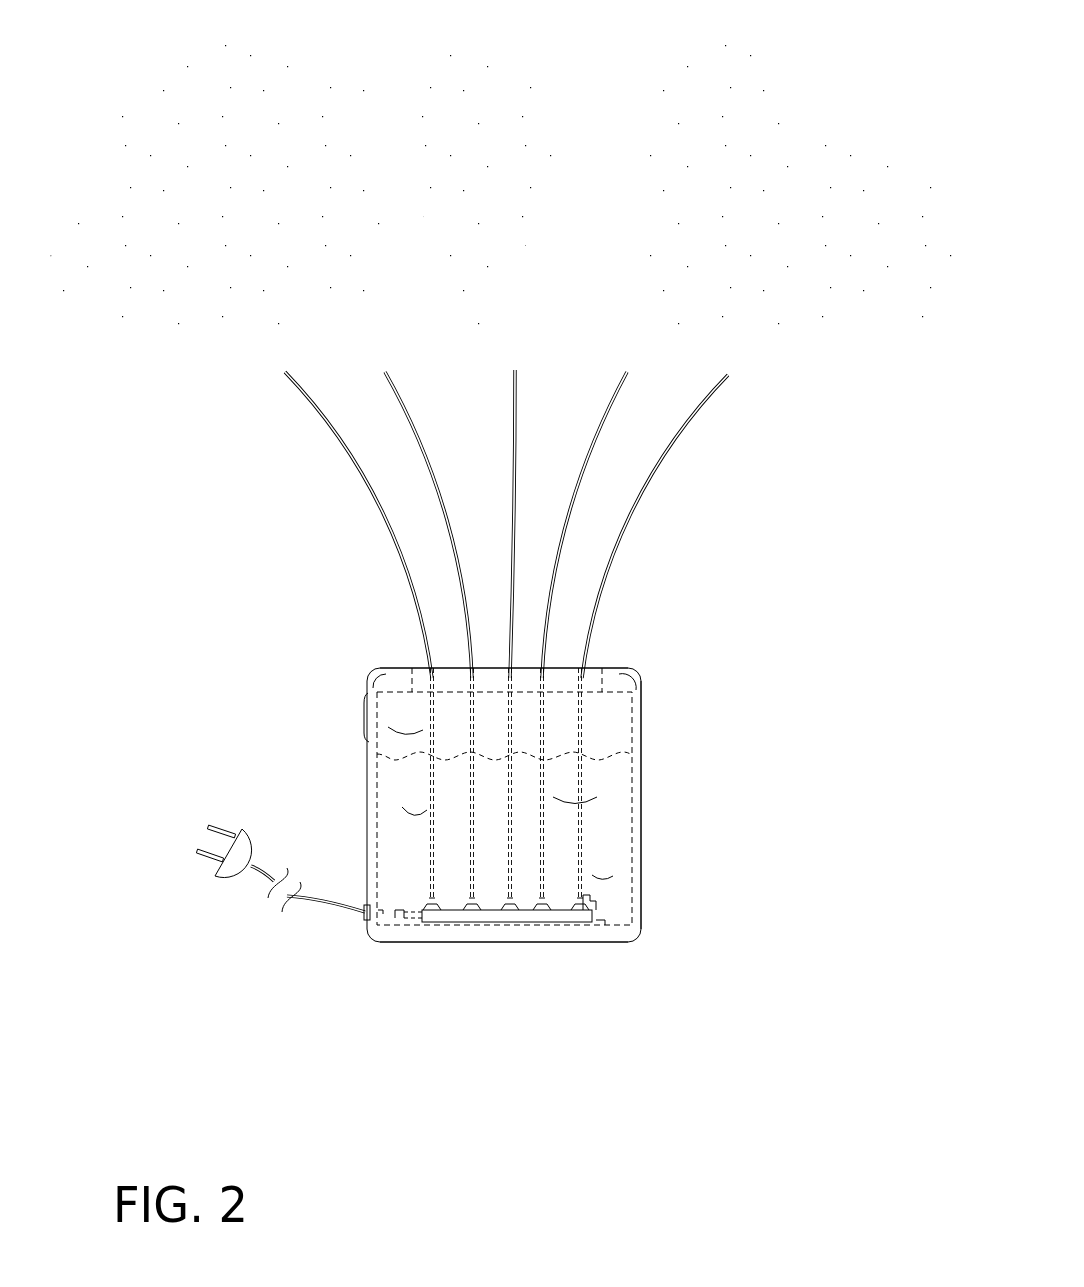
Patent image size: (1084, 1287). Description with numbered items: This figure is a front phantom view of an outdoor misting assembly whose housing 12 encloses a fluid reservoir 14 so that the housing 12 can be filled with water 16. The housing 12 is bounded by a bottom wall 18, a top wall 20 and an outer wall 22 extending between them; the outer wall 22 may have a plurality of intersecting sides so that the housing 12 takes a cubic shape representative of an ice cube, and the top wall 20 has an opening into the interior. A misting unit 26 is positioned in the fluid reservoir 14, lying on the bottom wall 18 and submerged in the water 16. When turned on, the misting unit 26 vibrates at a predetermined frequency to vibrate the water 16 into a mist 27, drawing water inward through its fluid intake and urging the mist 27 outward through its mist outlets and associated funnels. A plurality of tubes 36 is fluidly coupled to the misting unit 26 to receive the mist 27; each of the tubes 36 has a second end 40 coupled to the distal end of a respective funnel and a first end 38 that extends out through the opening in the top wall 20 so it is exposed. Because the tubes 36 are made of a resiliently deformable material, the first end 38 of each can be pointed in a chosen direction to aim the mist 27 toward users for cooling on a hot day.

The housing 12 is at (368, 695).
The fluid reservoir 14 is at (645, 721).
The water 16 is at (418, 754).
The bottom wall 18 is at (537, 933).
The top wall 20 is at (623, 668).
The outer wall 22 is at (638, 829).
The misting unit 26 is at (433, 907).
The mist 27 is at (292, 100).
The tubes 36 is at (514, 485).
The first end 38 is at (733, 375).
The second end 40 is at (573, 860).